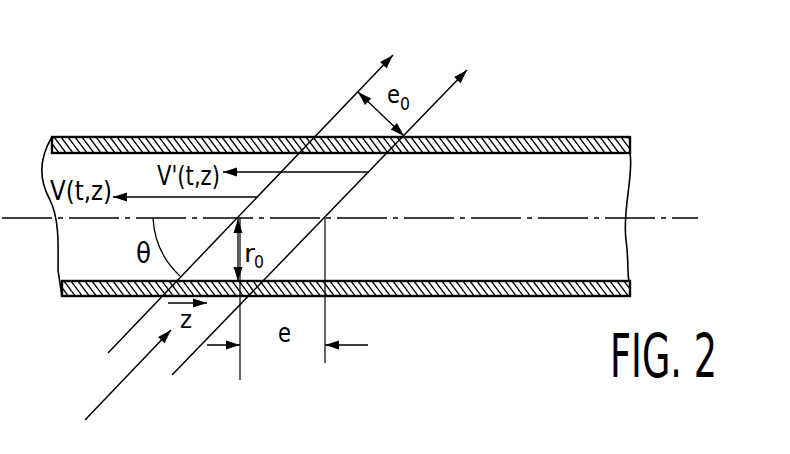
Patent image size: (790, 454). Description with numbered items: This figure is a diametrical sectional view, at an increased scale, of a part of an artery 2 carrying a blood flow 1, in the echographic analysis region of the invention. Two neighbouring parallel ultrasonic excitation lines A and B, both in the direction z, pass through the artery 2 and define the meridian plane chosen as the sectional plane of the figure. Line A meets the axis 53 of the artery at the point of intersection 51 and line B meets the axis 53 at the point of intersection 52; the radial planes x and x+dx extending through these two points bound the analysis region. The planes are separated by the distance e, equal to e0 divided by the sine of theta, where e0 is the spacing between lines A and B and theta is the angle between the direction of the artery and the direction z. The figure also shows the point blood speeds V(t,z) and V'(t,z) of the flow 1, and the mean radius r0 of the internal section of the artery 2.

The blood flow 1 is at (538, 170).
The artery 2 is at (105, 146).
The point of intersection 51 is at (241, 223).
The point of intersection 52 is at (328, 217).
The axis of the artery 53 is at (668, 217).